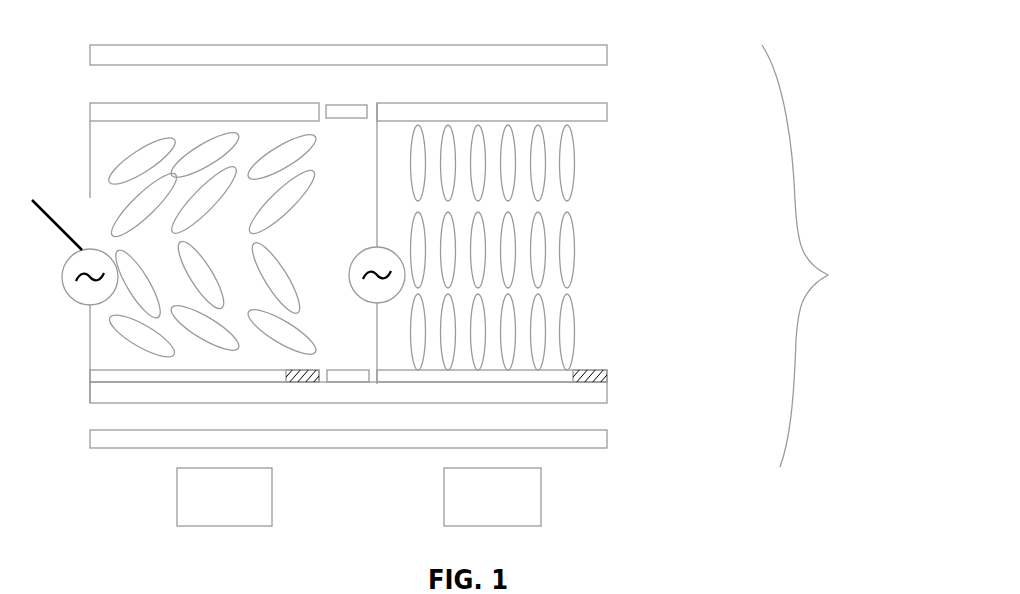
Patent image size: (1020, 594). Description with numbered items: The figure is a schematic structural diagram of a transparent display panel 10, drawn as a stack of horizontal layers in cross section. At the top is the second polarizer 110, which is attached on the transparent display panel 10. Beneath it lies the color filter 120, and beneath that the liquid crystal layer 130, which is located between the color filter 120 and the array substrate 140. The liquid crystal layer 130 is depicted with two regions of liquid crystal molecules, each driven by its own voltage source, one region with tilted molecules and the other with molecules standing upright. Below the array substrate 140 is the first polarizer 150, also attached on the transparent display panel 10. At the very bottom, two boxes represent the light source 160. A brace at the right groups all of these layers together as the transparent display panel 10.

The transparent display panel 10 is at (827, 256).
The second polarizer 110 is at (607, 53).
The color filter 120 is at (607, 110).
The liquid crystal layer 130 is at (574, 258).
The array substrate 140 is at (607, 385).
The first polarizer 150 is at (607, 430).
The light source 160 is at (541, 495).